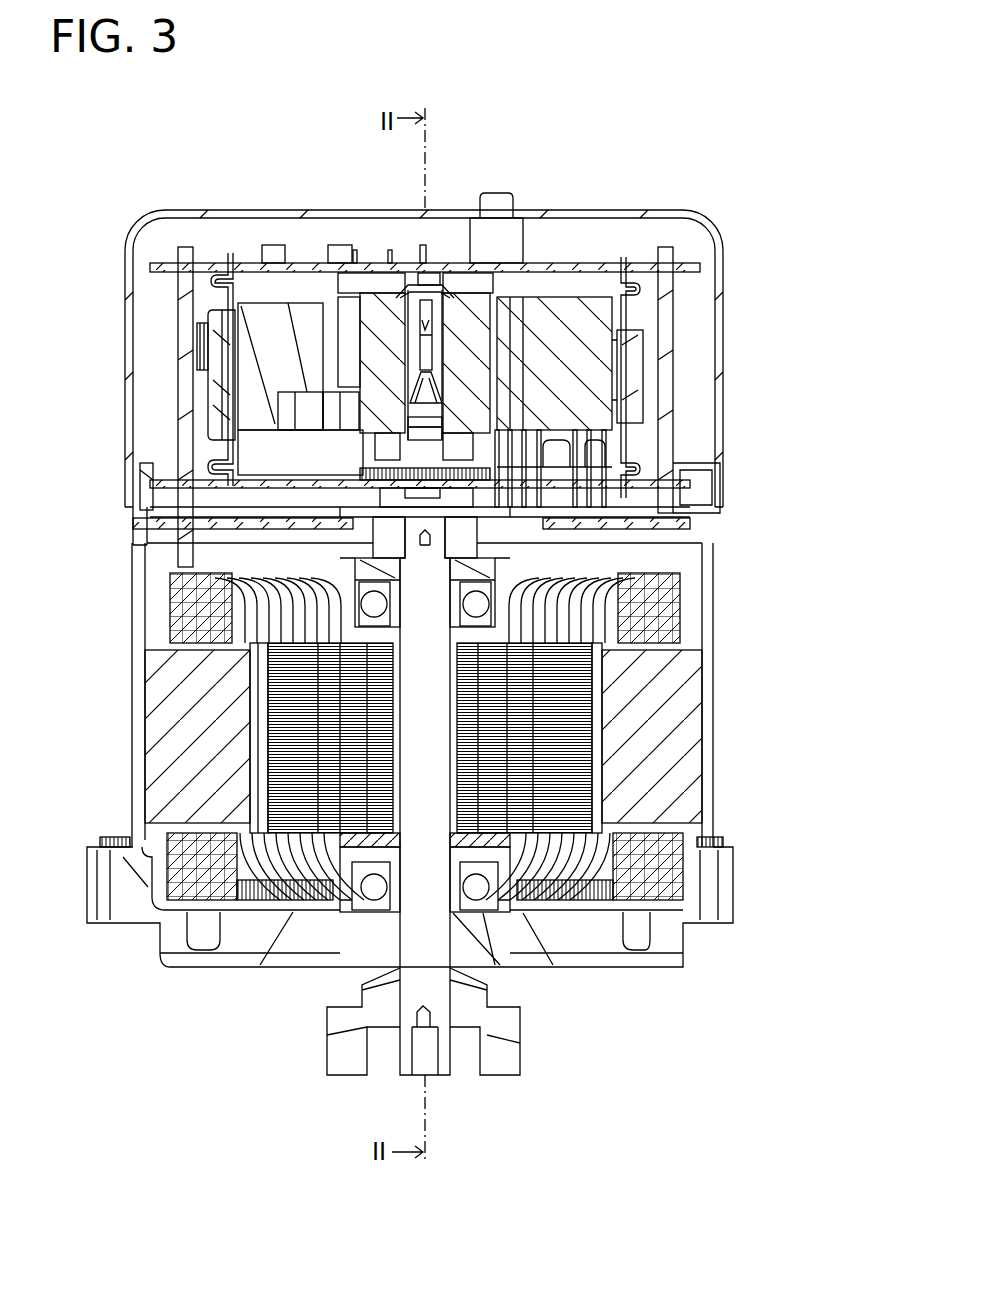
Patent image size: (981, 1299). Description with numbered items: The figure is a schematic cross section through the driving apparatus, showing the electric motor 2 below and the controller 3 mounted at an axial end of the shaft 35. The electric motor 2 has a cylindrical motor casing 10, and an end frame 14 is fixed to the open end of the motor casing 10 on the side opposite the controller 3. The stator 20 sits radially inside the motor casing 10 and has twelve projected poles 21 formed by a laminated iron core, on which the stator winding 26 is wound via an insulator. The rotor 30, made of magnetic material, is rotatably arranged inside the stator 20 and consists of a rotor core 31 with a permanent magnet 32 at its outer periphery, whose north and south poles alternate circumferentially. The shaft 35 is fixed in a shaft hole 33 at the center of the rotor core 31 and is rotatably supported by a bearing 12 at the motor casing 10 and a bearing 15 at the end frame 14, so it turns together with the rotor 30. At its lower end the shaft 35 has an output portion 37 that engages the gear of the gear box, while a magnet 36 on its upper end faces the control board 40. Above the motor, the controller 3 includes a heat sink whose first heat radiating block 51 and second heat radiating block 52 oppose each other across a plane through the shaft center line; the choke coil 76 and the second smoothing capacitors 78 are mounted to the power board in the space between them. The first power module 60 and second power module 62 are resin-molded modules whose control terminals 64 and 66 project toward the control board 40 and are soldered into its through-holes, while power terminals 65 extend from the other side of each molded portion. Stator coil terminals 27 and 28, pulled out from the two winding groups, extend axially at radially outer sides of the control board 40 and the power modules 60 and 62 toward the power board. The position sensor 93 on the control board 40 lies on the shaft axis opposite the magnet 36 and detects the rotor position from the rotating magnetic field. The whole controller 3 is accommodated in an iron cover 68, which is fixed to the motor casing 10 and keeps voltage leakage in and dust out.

The electric motor 2 is at (752, 683).
The controller 3 is at (678, 248).
The motor casing 10 is at (712, 727).
The bearing 12 is at (668, 637).
The end frame 14 is at (637, 962).
The bearing 15 is at (476, 888).
The stator 20 is at (677, 700).
The projected poles 21 is at (180, 755).
The stator winding 26 is at (665, 595).
The stator coil terminals 27 is at (672, 388).
The stator coil terminals 28 is at (185, 400).
The rotor 30 is at (268, 793).
The rotor core 31 is at (225, 698).
The permanent magnet 32 is at (160, 690).
The shaft hole 33 is at (462, 990).
The shaft 35 is at (413, 953).
The magnet 36 is at (315, 540).
The output portion 37 is at (352, 1055).
The control board 40 is at (648, 480).
The first heat radiating block 51 is at (598, 355).
The second heat radiating block 52 is at (245, 365).
The first power module 60 is at (605, 322).
The second power module 62 is at (213, 320).
The control terminals 64 is at (700, 508).
The power terminals 65 is at (230, 255).
The control terminals 66 is at (200, 495).
The cover 68 is at (718, 213).
The choke coil 76 is at (418, 300).
The second smoothing capacitors 78 is at (383, 310).
The position sensor 93 is at (300, 512).